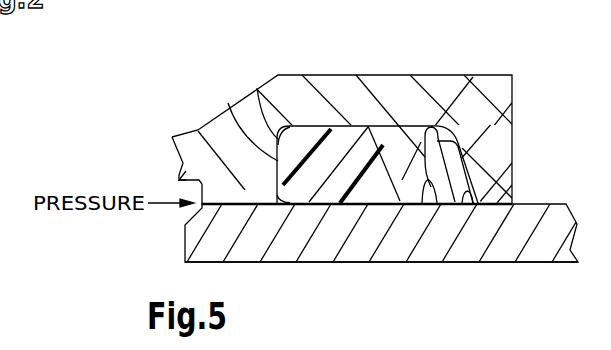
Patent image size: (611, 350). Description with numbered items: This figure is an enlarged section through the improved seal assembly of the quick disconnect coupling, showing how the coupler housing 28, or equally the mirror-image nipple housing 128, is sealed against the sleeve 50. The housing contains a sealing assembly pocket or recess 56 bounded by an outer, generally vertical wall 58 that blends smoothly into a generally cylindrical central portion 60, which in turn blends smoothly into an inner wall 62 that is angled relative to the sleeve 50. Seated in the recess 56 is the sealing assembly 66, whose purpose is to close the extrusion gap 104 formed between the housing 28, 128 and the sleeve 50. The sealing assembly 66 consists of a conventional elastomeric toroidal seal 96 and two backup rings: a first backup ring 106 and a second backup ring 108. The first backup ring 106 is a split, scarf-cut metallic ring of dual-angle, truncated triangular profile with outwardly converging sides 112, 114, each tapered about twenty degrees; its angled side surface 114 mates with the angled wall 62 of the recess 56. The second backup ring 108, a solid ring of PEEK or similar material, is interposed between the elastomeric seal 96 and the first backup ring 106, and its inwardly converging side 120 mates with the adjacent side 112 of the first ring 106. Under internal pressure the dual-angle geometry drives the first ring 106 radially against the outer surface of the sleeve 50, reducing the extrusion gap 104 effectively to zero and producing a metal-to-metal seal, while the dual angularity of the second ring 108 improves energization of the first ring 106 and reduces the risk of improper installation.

The coupler housing 28 is at (381, 249).
The nipple housing 128 is at (233, 186).
The sleeve 50 is at (375, 238).
The sealing assembly pocket or recess 56 is at (303, 110).
The outer, generally vertical wall 58 is at (236, 177).
The generally cylindrical central portion 60 is at (343, 125).
The angled inner wall 62 is at (534, 135).
The sealing assembly 66 is at (392, 125).
The elastomeric seal 96 is at (211, 145).
The extrusion gap 104 is at (513, 185).
The first backup ring 106 is at (513, 108).
The second backup ring 108 is at (429, 127).
The outwardly converging side 112 is at (429, 192).
The angled side surface 114 is at (470, 196).
The inwardly converging side 120 is at (443, 129).